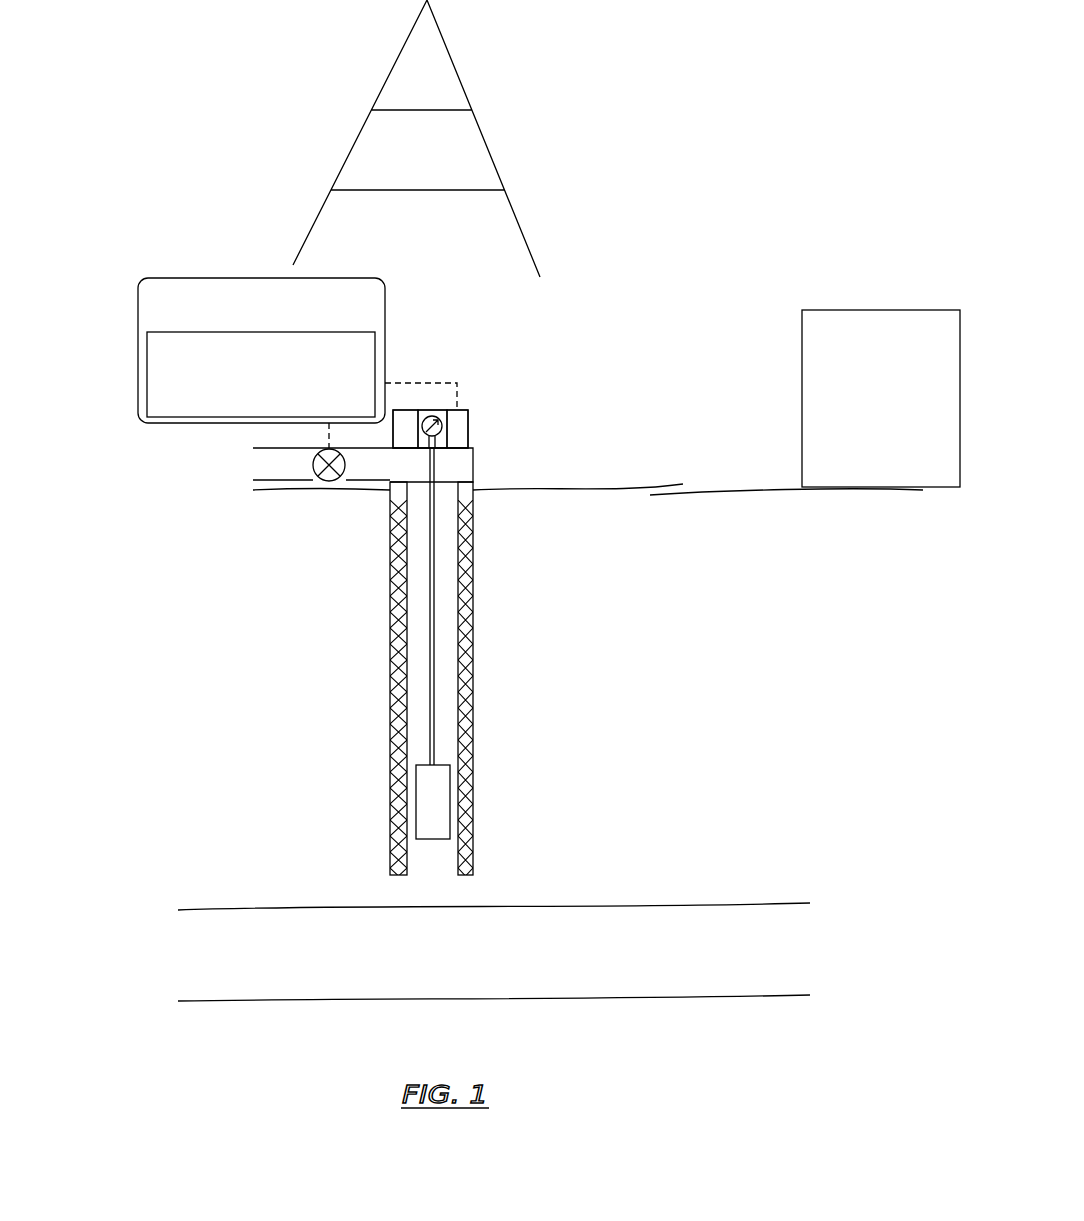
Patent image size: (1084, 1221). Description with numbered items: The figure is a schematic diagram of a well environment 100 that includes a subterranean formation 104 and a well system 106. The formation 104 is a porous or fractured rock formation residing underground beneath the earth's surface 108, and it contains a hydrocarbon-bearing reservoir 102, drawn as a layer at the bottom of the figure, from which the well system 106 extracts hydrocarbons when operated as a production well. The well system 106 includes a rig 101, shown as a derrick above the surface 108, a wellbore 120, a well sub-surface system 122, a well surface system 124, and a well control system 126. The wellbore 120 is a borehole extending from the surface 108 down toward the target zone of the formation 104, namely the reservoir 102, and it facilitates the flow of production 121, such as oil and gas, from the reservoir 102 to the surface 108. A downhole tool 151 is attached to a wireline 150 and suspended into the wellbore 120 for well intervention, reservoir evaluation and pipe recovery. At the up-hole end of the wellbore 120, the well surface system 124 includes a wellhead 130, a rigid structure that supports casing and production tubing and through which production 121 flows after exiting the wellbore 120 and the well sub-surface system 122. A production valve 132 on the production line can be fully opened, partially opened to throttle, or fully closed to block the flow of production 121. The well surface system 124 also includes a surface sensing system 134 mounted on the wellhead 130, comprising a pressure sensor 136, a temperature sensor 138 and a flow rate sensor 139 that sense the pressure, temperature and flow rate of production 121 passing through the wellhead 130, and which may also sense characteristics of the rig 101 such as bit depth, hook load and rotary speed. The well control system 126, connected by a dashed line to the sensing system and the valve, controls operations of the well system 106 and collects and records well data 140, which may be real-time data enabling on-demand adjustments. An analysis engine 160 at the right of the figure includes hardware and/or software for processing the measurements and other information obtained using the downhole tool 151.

The well environment 100 is at (560, 162).
The rig 101 is at (479, 66).
The reservoir 102 is at (593, 971).
The formation 104 is at (590, 783).
The well system 106 is at (235, 254).
The surface 108 is at (561, 499).
The wellbore 120 is at (479, 636).
The production 121 is at (287, 469).
The well sub-surface system 122 is at (385, 728).
The well surface system 124 is at (649, 333).
The well control system 126 is at (179, 328).
The wellhead 130 is at (480, 477).
The production valve 132 is at (327, 481).
The surface sensing system 134 is at (474, 424).
The pressure sensor 136 is at (430, 412).
The temperature sensor 138 is at (458, 410).
The flow rate sensor 139 is at (405, 410).
The well data 140 is at (277, 395).
The wireline 150 is at (427, 634).
The downhole tool 151 is at (417, 801).
The analysis engine 160 is at (899, 435).